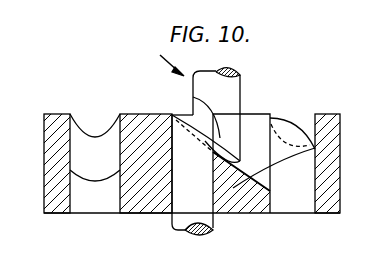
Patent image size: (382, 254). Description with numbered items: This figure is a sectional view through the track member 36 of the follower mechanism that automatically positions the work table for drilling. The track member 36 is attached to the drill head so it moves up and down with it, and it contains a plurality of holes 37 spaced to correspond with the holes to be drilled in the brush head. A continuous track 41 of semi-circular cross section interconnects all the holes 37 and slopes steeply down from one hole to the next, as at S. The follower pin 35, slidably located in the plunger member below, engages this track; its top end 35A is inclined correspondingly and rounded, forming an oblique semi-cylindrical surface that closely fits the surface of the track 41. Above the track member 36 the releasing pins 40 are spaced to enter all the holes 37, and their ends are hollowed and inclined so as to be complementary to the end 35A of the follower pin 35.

The follower pin 35 is at (213, 115).
The end of follower pin 35A is at (196, 102).
The track member 36 is at (135, 114).
The holes 37 is at (83, 147).
The releasing pins 40 is at (213, 231).
The track 41 is at (100, 125).
The steeply sloping portion of track S is at (315, 149).